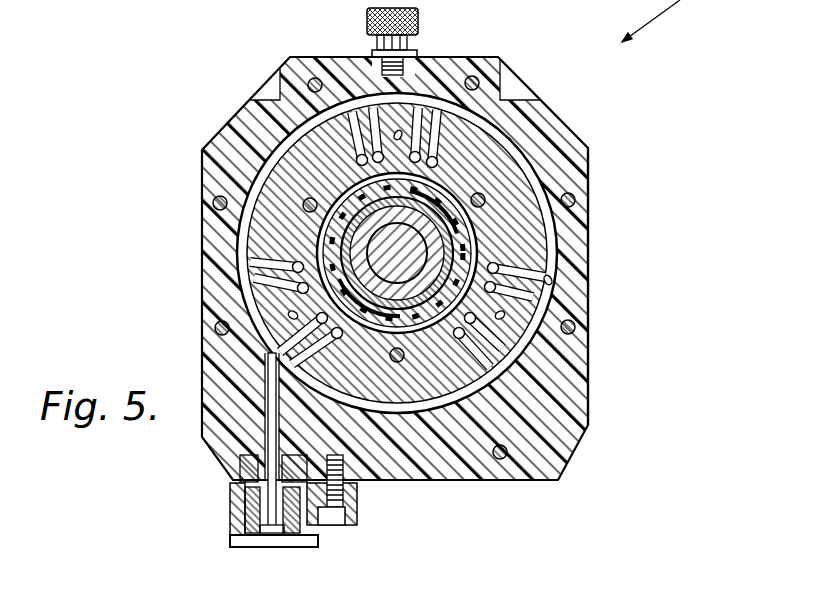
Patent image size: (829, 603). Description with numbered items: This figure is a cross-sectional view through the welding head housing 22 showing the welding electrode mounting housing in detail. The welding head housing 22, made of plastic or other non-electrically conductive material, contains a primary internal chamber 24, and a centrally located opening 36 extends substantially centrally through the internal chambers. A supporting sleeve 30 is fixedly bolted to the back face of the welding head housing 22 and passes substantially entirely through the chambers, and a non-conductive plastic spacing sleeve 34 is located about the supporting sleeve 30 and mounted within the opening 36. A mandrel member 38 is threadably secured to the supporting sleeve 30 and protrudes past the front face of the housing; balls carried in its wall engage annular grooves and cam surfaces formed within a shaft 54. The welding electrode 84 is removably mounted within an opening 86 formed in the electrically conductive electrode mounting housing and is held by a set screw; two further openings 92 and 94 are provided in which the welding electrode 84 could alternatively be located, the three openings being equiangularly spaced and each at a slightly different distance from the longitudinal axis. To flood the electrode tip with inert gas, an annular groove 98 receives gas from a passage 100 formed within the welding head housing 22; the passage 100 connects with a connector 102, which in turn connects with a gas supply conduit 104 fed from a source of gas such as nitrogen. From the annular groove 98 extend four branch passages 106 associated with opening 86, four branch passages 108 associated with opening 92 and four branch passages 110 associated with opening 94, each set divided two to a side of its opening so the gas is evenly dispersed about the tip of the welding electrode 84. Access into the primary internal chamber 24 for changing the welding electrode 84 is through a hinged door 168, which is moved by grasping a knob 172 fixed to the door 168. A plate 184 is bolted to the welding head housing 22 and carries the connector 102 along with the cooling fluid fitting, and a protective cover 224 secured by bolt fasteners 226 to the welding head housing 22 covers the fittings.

The welding head housing 22 is at (585, 143).
The primary internal chamber 24 is at (548, 280).
The supporting sleeve 30 is at (452, 236).
The spacing sleeve 34 is at (437, 200).
The centrally located opening 36 is at (458, 252).
The mandrel member 38 is at (352, 245).
The shaft 54 is at (250, 260).
The welding electrode 84 is at (445, 120).
The opening 86 is at (353, 140).
The opening 92 is at (293, 315).
The opening 94 is at (507, 348).
The annular groove 98 is at (245, 288).
The passage 100 is at (265, 445).
The connector 102 is at (237, 510).
The gas supply conduit 104 is at (233, 543).
The branch passages 106 is at (300, 107).
The branch passages 108 is at (270, 410).
The branch passages 110 is at (587, 387).
The door 168 is at (368, 70).
The knob 172 is at (367, 12).
The plate 184 is at (240, 480).
The protective cover 224 is at (318, 537).
The bolt fasteners 226 is at (355, 512).